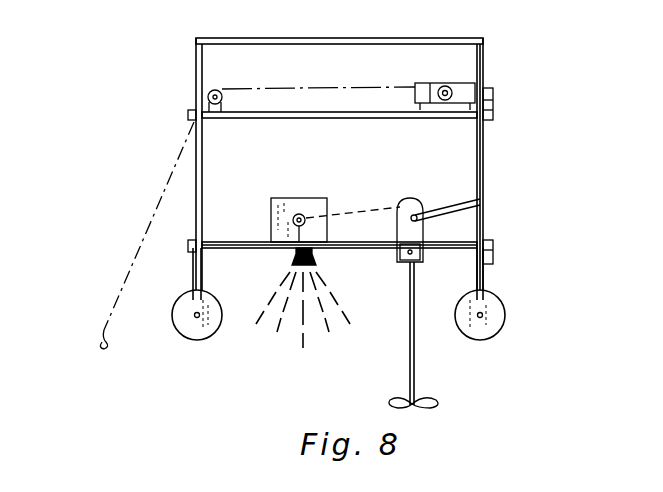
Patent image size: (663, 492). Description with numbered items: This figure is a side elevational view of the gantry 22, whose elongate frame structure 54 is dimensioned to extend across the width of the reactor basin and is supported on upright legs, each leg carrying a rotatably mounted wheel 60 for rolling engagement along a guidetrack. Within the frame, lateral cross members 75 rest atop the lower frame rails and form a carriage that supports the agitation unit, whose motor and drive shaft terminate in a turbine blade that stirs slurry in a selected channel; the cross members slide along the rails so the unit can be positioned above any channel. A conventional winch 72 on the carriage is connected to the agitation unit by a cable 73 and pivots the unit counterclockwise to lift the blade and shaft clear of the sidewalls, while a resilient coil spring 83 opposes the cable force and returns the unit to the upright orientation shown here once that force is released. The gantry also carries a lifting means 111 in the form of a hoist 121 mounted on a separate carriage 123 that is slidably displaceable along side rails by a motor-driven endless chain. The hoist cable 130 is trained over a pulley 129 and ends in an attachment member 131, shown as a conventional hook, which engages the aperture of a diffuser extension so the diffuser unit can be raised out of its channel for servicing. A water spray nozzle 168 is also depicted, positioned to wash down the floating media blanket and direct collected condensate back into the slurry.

The gantry 22 is at (372, 38).
The frame structure 54 is at (484, 170).
The wheel 60 is at (254, 242).
The winch 72 is at (302, 214).
The cable 73 is at (366, 208).
The lateral cross members 75 is at (376, 249).
The resilient coil spring 83 is at (456, 200).
The lifting means 111 is at (128, 272).
The hoist 121 is at (453, 92).
The carriage 123 is at (370, 117).
The pulley 129 is at (208, 95).
The cable 130 is at (312, 87).
The attachment member 131 is at (108, 346).
The water spray nozzle 168 is at (292, 260).